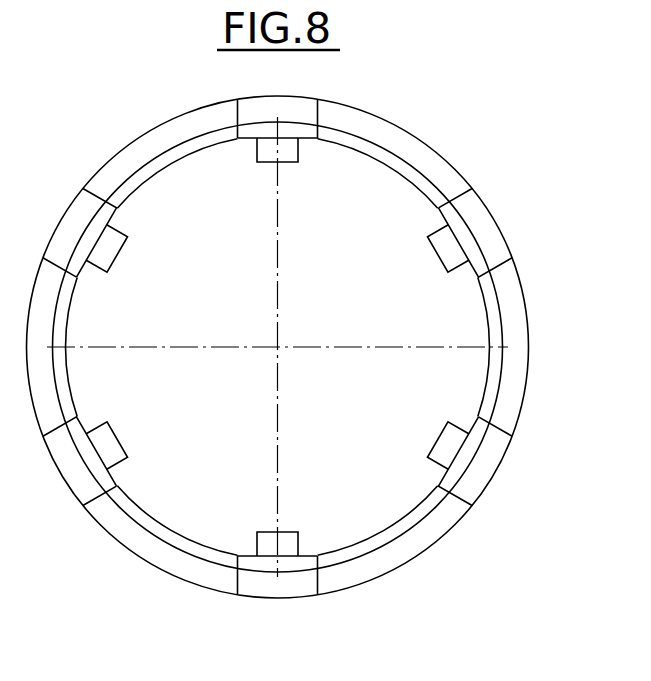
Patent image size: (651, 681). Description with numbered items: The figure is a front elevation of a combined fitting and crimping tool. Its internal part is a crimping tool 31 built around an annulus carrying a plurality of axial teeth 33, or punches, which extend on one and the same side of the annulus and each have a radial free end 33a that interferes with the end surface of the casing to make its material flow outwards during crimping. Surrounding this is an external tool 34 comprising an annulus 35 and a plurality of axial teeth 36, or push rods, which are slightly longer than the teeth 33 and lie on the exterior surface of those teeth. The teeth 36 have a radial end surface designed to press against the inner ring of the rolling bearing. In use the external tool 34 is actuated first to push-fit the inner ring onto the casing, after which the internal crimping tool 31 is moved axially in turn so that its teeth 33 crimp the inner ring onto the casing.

The crimping tool 31 is at (122, 431).
The axial teeth 33 is at (265, 160).
The radial free end 33a is at (107, 253).
The external tool 34 is at (192, 584).
The annulus 35 is at (430, 530).
The axial teeth 36 is at (485, 470).